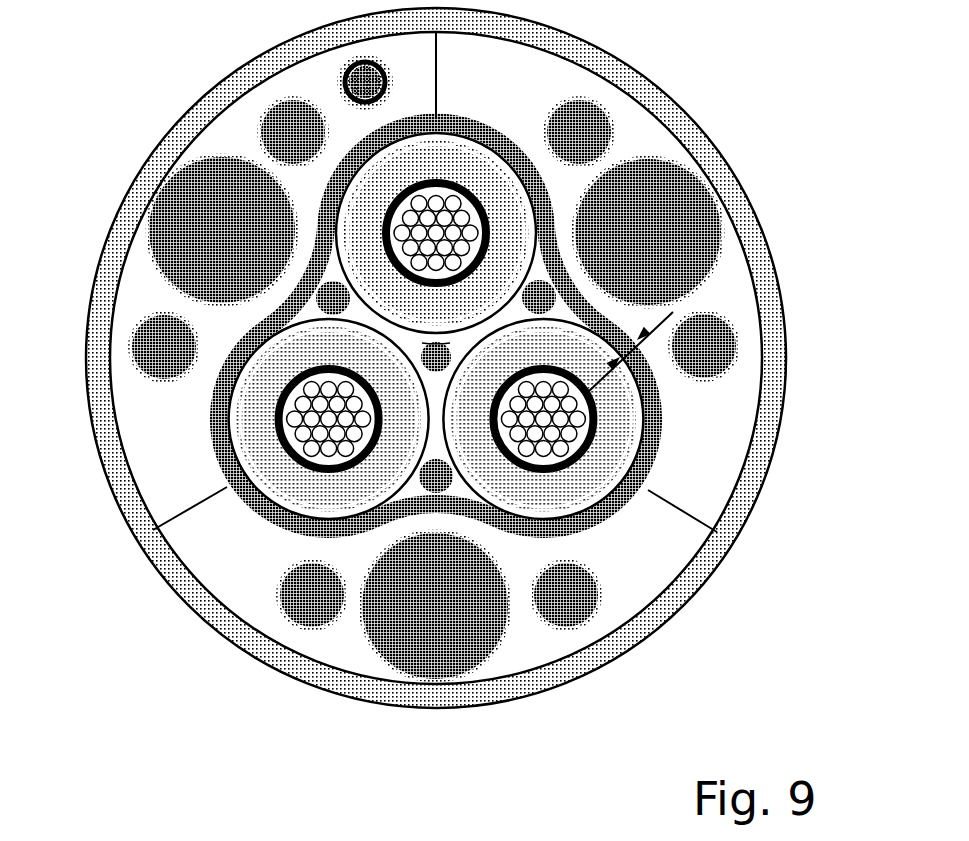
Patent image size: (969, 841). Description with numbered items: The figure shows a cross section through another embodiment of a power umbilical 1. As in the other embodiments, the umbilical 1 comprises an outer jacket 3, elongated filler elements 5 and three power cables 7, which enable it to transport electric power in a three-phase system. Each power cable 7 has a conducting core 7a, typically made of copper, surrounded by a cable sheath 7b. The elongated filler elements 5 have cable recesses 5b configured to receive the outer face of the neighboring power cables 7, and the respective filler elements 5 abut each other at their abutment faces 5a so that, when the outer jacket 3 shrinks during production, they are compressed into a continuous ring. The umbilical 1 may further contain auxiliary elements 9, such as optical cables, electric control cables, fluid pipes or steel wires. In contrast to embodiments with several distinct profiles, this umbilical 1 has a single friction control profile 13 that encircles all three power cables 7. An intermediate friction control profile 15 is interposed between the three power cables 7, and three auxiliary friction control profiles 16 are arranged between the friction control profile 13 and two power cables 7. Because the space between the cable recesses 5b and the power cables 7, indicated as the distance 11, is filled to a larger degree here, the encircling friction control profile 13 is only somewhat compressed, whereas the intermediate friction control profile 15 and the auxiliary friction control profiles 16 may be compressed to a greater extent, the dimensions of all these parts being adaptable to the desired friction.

The power umbilical 1 is at (197, 55).
The outer jacket 3 is at (318, 677).
The elongated filler elements 5 is at (512, 78).
The abutment faces 5a is at (183, 515).
The cable recesses 5b is at (210, 430).
The power cables 7 is at (590, 522).
The conducting core 7a is at (427, 218).
The cable sheath 7b is at (525, 518).
The auxiliary elements 9 is at (635, 195).
The distance 11 is at (660, 380).
The friction control profile 13 is at (623, 510).
The intermediate friction control profile 15 is at (436, 358).
The auxiliary friction control profiles 16 is at (335, 303).